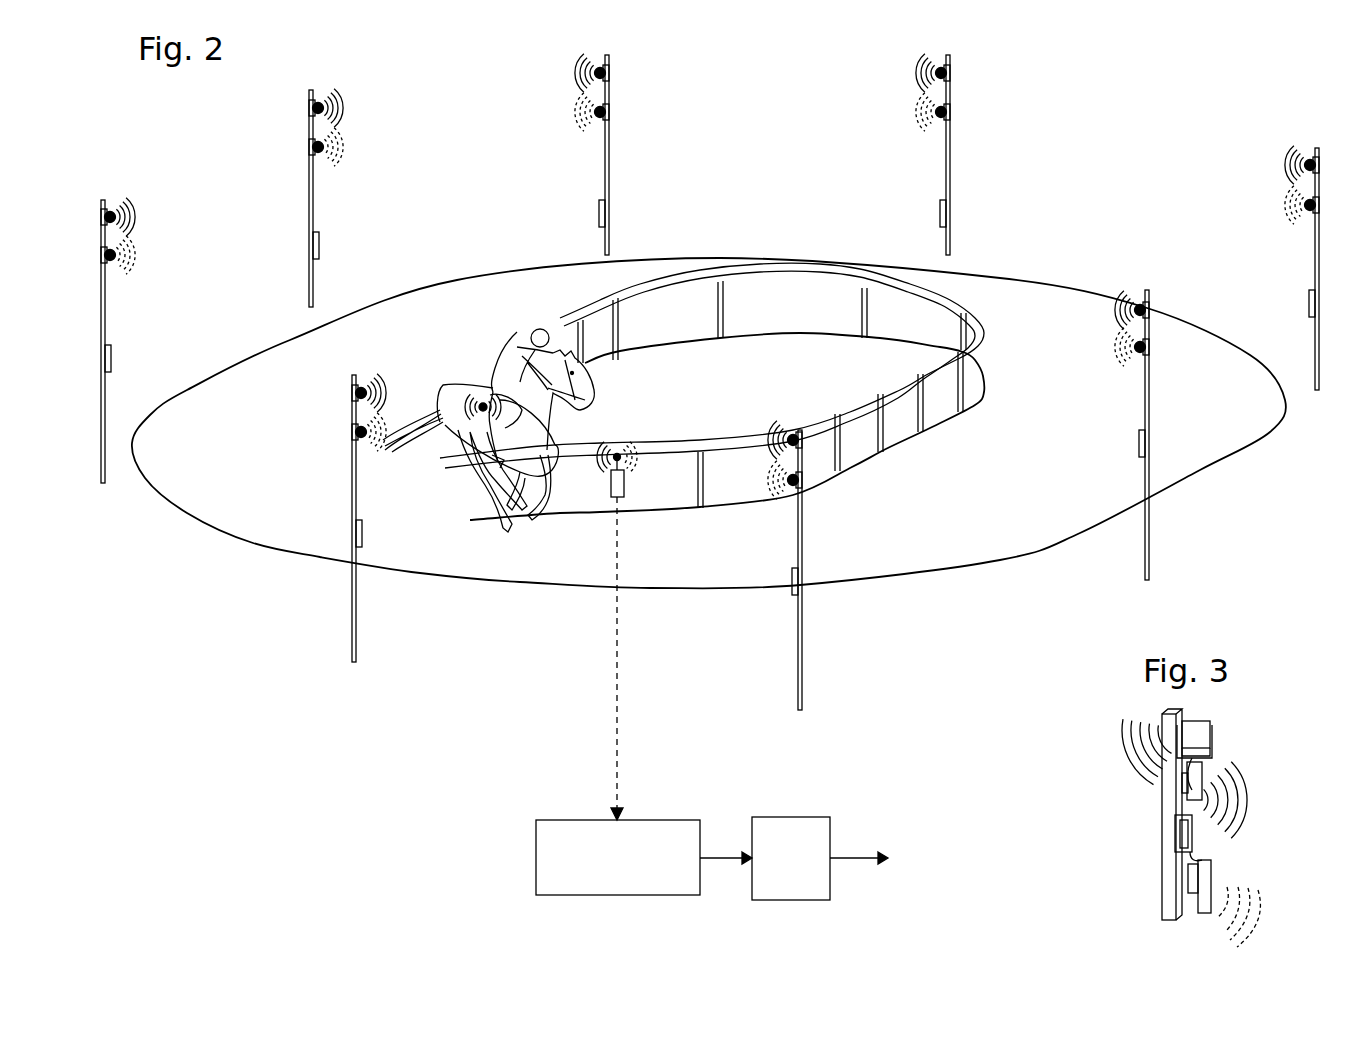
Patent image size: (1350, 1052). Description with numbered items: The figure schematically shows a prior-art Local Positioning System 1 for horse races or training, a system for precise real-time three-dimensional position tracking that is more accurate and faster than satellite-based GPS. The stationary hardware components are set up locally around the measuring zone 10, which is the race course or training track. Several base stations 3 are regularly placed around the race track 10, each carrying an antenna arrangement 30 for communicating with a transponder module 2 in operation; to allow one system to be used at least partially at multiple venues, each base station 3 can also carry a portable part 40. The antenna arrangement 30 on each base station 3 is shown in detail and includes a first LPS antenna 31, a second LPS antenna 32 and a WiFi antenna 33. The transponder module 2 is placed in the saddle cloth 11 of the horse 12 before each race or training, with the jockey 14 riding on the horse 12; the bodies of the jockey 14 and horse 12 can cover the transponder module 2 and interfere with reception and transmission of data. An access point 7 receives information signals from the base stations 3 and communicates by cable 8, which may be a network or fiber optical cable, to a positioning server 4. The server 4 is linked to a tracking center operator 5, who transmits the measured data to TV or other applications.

In FIG. 2, the Local Positioning System 1 is at (710, 485).
In FIG. 2, the transponder module 2 is at (524, 429).
In FIG. 2, the base station 3 is at (710, 382).
In FIG. 2, the positioning server 4 is at (677, 887).
In FIG. 2, the tracking center operator 5 is at (789, 888).
In FIG. 2, the access point 7 is at (625, 490).
In FIG. 2, the cable 8 is at (619, 672).
In FIG. 2, the measuring zone 10 is at (995, 542).
In FIG. 2, the saddle cloth 11 is at (460, 465).
In FIG. 2, the horse 12 is at (597, 380).
In FIG. 2, the jockey 14 is at (510, 357).
In FIG. 2, the antenna arrangement 30 is at (106, 318).
In FIG. 3, the antenna arrangement 30 is at (1231, 772).
In FIG. 3, the first LPS antenna 31 is at (1197, 734).
In FIG. 3, the second LPS antenna 32 is at (1197, 787).
In FIG. 3, the WiFi antenna 33 is at (1210, 873).
In FIG. 2, the portable part 40 is at (330, 248).